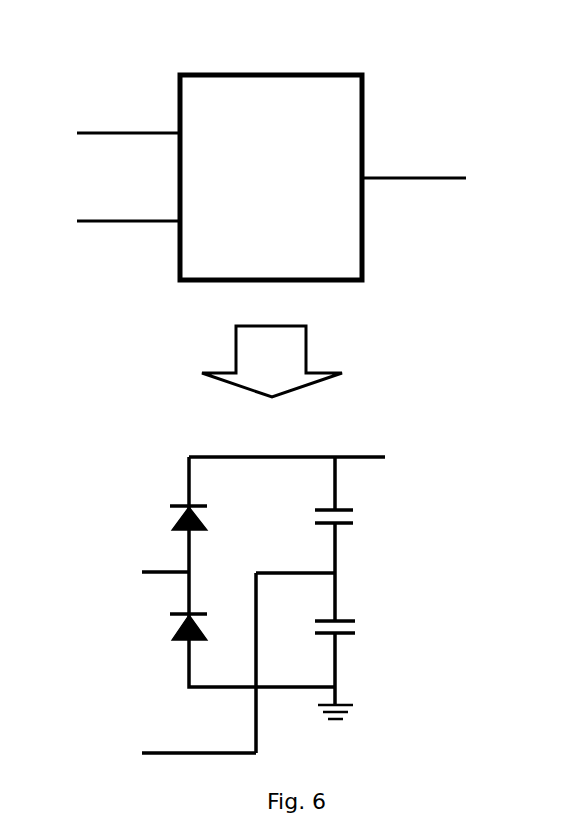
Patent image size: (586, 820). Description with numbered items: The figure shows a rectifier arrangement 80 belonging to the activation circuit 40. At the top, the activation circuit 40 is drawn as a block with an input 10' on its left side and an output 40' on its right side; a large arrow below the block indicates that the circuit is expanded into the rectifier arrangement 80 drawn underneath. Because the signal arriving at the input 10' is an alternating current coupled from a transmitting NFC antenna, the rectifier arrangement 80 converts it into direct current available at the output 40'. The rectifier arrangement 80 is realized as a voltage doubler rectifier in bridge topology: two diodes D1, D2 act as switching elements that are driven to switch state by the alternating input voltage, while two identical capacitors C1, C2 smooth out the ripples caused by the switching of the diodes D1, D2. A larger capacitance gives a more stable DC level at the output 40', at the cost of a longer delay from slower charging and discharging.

The activation circuit 40 is at (271, 143).
The input of the activation circuit 10' is at (146, 443).
The output of the activation circuit 40' is at (361, 317).
The rectifier arrangement 80 is at (231, 550).
The diode D1 is at (200, 536).
The diode D2 is at (200, 641).
The capacitor C1 is at (345, 644).
The capacitor C2 is at (345, 533).